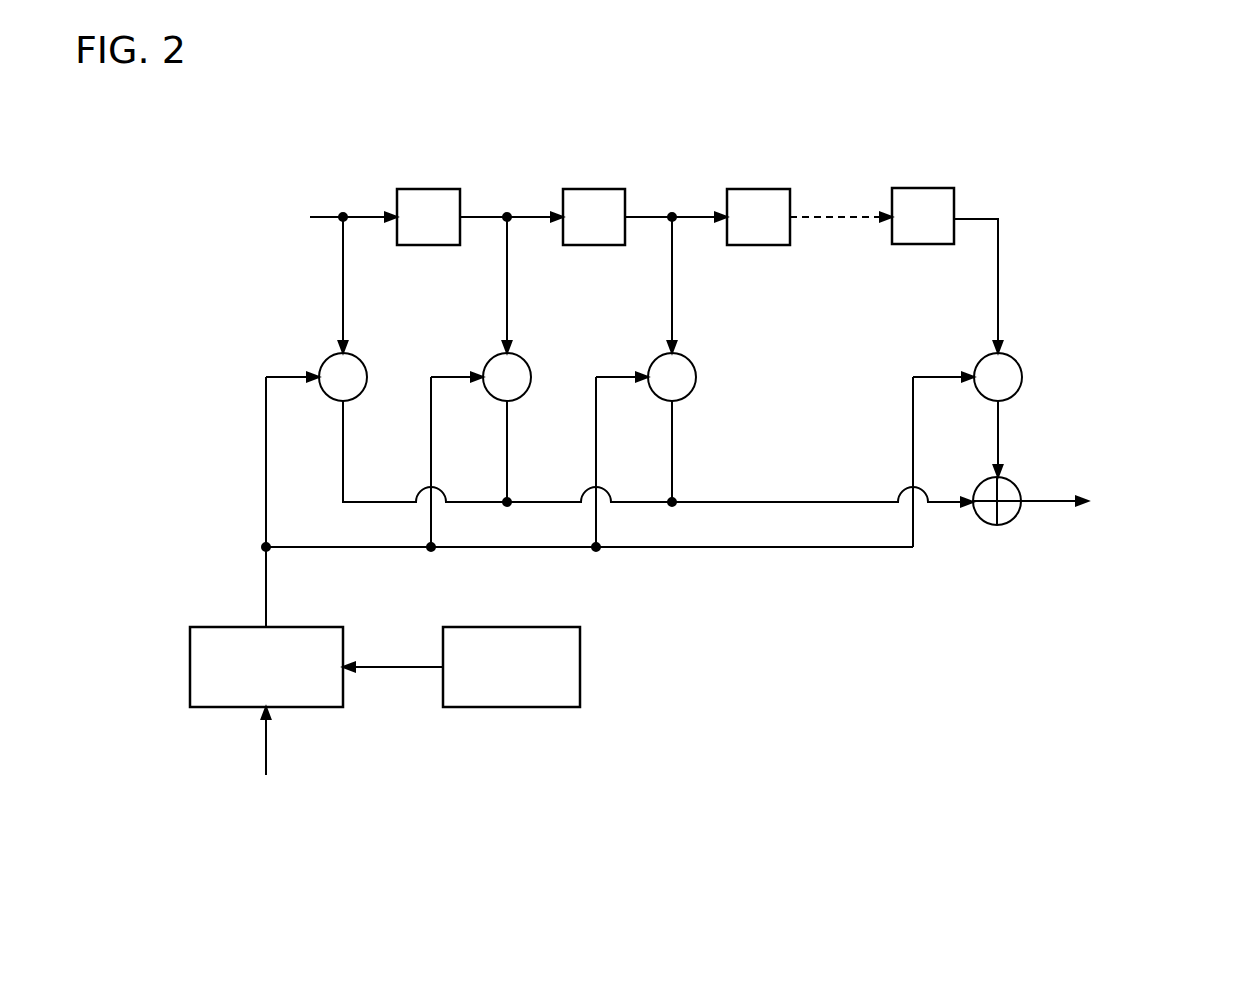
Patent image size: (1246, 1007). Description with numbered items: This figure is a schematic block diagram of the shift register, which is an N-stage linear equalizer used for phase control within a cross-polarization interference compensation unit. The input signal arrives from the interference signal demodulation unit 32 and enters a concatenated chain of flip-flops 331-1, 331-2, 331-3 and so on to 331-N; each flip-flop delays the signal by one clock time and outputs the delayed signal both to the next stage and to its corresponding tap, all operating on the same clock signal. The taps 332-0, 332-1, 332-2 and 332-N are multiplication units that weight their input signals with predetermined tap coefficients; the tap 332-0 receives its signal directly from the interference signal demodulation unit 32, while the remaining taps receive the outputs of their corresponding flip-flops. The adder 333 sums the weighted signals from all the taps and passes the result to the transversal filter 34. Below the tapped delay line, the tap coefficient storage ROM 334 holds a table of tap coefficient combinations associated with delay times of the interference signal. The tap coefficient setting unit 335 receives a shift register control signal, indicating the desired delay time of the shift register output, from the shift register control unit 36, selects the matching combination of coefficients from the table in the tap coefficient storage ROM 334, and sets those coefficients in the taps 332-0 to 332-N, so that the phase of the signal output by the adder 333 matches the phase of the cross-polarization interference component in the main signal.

The interference signal demodulation unit 32 is at (208, 217).
The flip-flop 331-1 is at (418, 189).
The flip-flop 331-2 is at (597, 189).
The flip-flop 331-3 is at (752, 187).
The flip-flop 331-N is at (927, 187).
The tap 332-0 is at (325, 355).
The tap 332-1 is at (490, 356).
The tap 332-2 is at (653, 355).
The tap 332-N is at (978, 355).
The adder 333 is at (1017, 478).
The tap coefficient storage ROM 334 is at (543, 626).
The tap coefficient setting unit 335 is at (308, 627).
The transversal filter 34 is at (1118, 499).
The shift register control unit 36 is at (267, 767).